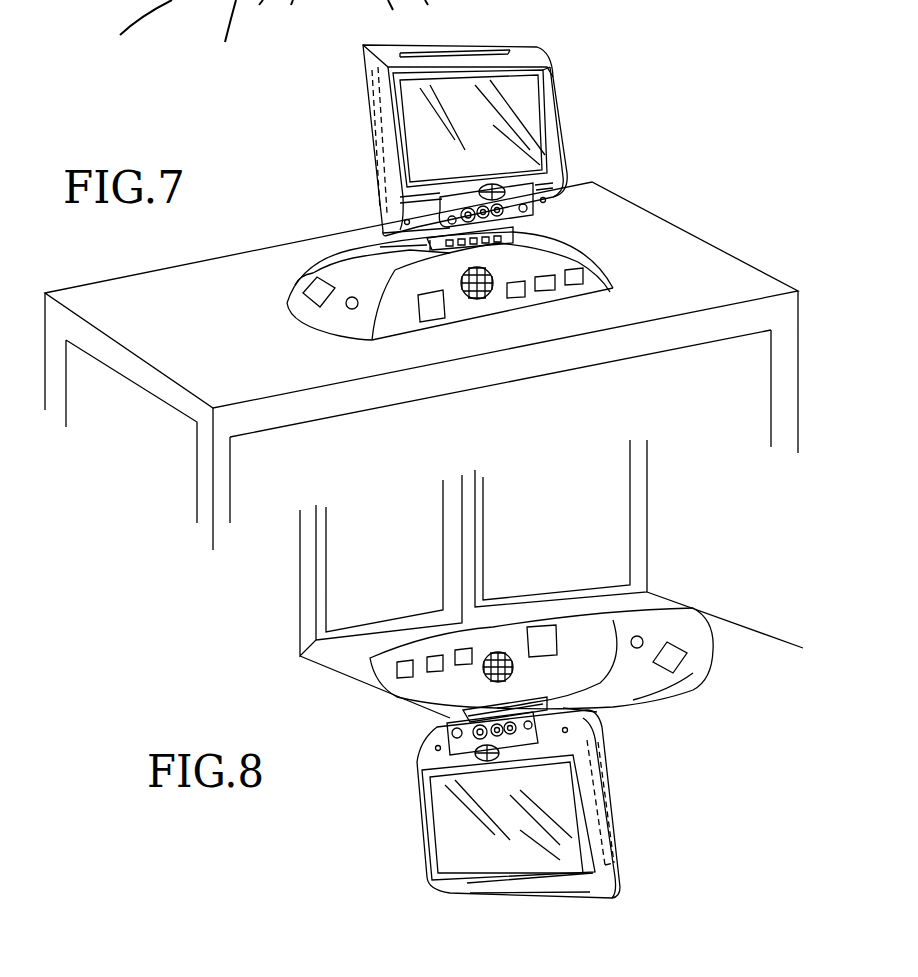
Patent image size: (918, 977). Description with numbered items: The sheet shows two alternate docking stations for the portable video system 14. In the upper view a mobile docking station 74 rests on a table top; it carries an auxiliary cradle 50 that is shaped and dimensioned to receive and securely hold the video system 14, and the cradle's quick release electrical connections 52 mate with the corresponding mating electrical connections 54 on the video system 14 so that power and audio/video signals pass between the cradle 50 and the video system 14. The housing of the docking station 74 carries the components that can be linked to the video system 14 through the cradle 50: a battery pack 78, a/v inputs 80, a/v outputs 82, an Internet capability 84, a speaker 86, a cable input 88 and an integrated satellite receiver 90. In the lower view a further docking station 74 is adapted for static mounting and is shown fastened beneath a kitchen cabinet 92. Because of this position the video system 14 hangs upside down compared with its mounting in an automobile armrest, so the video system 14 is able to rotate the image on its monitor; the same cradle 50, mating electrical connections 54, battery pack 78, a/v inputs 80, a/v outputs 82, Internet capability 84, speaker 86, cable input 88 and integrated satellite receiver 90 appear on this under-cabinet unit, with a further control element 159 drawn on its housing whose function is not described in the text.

In FIG. 7, the video system 14 is at (520, 53).
In FIG. 8, the video system 14 is at (457, 893).
In FIG. 7, the docking station 74 is at (335, 249).
In FIG. 7, the electrical connections 52 is at (305, 268).
In FIG. 7, the mating electrical connections 54 is at (372, 253).
In FIG. 8, the mating electrical connections 54 is at (452, 713).
In FIG. 7, the auxiliary cradle 50 is at (520, 230).
In FIG. 8, the auxiliary cradle 50 is at (575, 694).
In FIG. 7, the integrated satellite receiver 90 is at (300, 293).
In FIG. 7, the cable input 88 is at (348, 307).
In FIG. 8, the cable input 88 is at (642, 638).
In FIG. 7, the Internet capability 84 is at (433, 310).
In FIG. 8, the Internet capability 84 is at (540, 637).
In FIG. 7, the speakers 86 is at (480, 300).
In FIG. 8, the speakers 86 is at (500, 651).
In FIG. 7, the a/v outputs 82 is at (518, 290).
In FIG. 8, the a/v outputs 82 is at (463, 653).
In FIG. 7, the a/v inputs 80 is at (544, 283).
In FIG. 8, the a/v inputs 80 is at (433, 670).
In FIG. 7, the battery pack 78 is at (573, 277).
In FIG. 8, the battery pack 78 is at (400, 673).
In FIG. 8, the kitchen cabinet 92 is at (330, 665).
In FIG. 8, the square button 159 is at (683, 653).